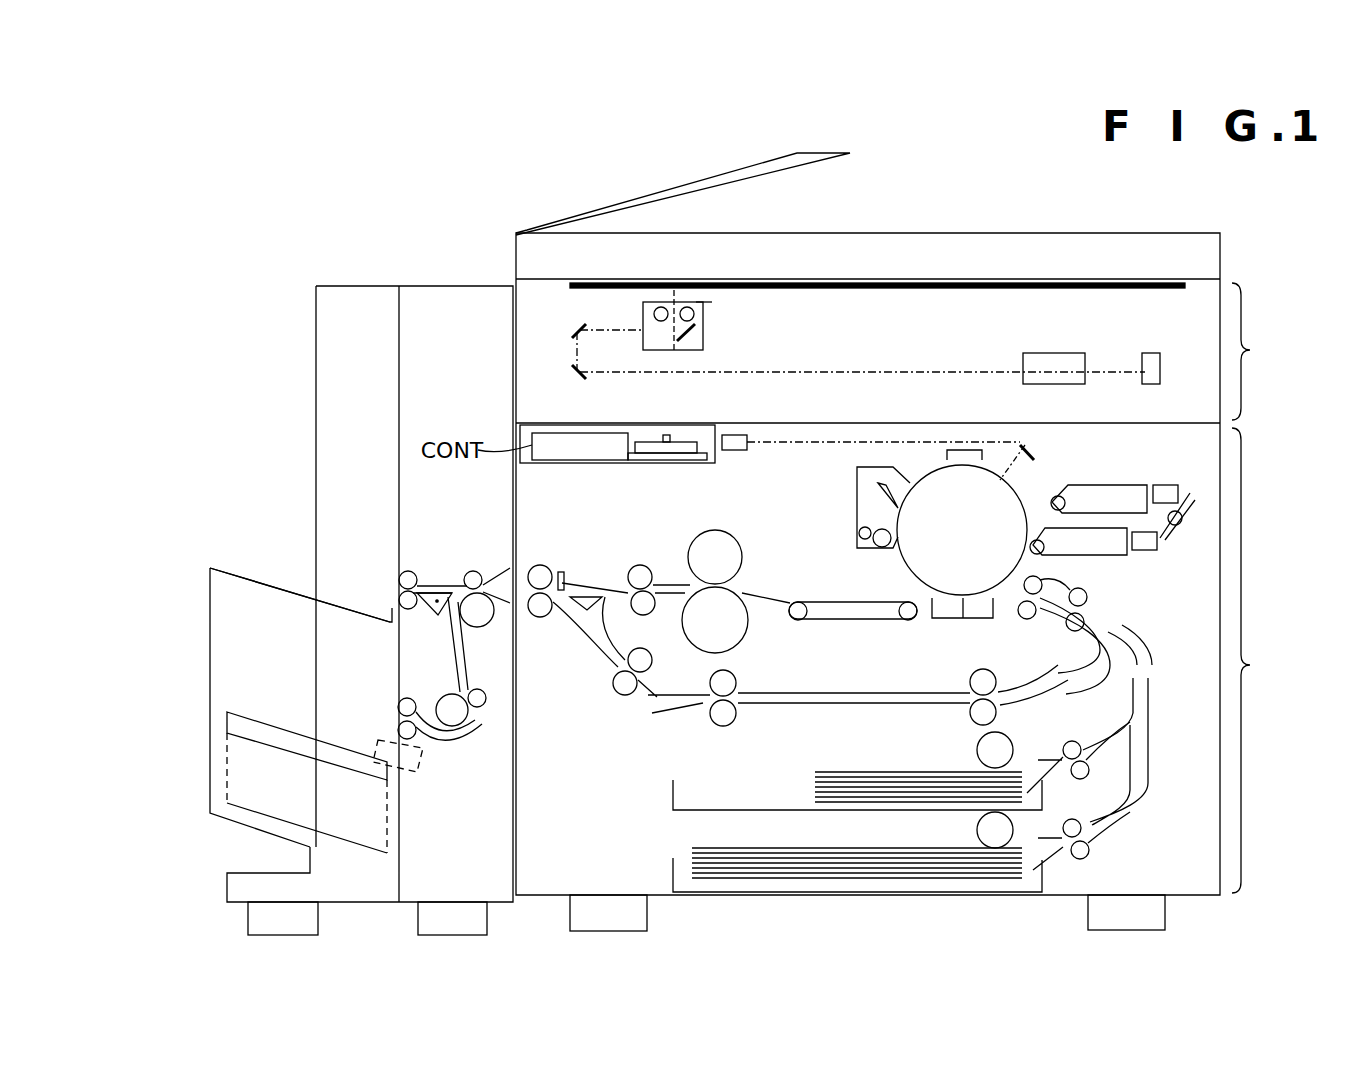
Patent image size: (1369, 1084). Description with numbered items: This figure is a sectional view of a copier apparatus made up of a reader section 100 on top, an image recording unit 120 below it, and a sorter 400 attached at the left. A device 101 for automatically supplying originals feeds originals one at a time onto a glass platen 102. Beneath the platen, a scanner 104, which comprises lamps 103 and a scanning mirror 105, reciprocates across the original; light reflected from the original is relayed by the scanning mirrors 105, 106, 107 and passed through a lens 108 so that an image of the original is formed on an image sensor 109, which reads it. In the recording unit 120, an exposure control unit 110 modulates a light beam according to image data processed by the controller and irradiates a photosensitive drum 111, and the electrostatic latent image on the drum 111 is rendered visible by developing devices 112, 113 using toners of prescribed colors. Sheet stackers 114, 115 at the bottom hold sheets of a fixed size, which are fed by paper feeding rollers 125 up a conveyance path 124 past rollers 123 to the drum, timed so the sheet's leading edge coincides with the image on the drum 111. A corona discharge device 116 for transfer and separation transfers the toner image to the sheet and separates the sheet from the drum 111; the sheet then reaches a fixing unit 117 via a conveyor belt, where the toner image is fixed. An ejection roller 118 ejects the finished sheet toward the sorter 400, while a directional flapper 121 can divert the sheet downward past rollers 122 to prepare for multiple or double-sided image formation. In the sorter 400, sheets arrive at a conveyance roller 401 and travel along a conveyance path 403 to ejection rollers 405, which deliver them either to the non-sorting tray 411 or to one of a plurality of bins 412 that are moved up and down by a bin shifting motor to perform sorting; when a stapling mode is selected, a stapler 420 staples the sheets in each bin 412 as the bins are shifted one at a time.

The image reader section 100 is at (907, 351).
The device for automatically supplying originals 101 is at (643, 198).
The glass platen 102 is at (1138, 285).
The lamps 103 is at (703, 312).
The scanner 104 is at (700, 303).
The scanning mirror 105 is at (703, 340).
The scanning mirror 106 is at (572, 330).
The scanning mirror 107 is at (572, 372).
The lens 108 is at (1068, 353).
The image sensor 109 is at (1150, 353).
The exposure control unit 110 is at (656, 442).
The photosensitive drum 111 is at (935, 480).
The developing device 112 is at (1122, 485).
The developing device 113 is at (1098, 555).
The sheet stacker 114 is at (1043, 783).
The sheet stacker 115 is at (1035, 870).
The corona discharge device for transfer and separation 116 is at (953, 620).
The fixing unit 117 is at (700, 533).
The ejection roller 118 is at (537, 610).
The image recording unit 120 is at (907, 582).
The directional flapper 121 is at (610, 572).
The reverse rollers 122 is at (600, 650).
The feed rollers 123 is at (703, 703).
The paper conveying path 124 is at (858, 707).
The conveying rollers 125 is at (1095, 610).
The sorter 400 is at (222, 633).
The conveyance roller 401 is at (458, 600).
The conveyance path 403 is at (448, 640).
The ejection rollers 405 is at (398, 703).
The non-sorting tray 411 is at (260, 580).
The bins 412 is at (257, 717).
The stapler 420 is at (422, 762).